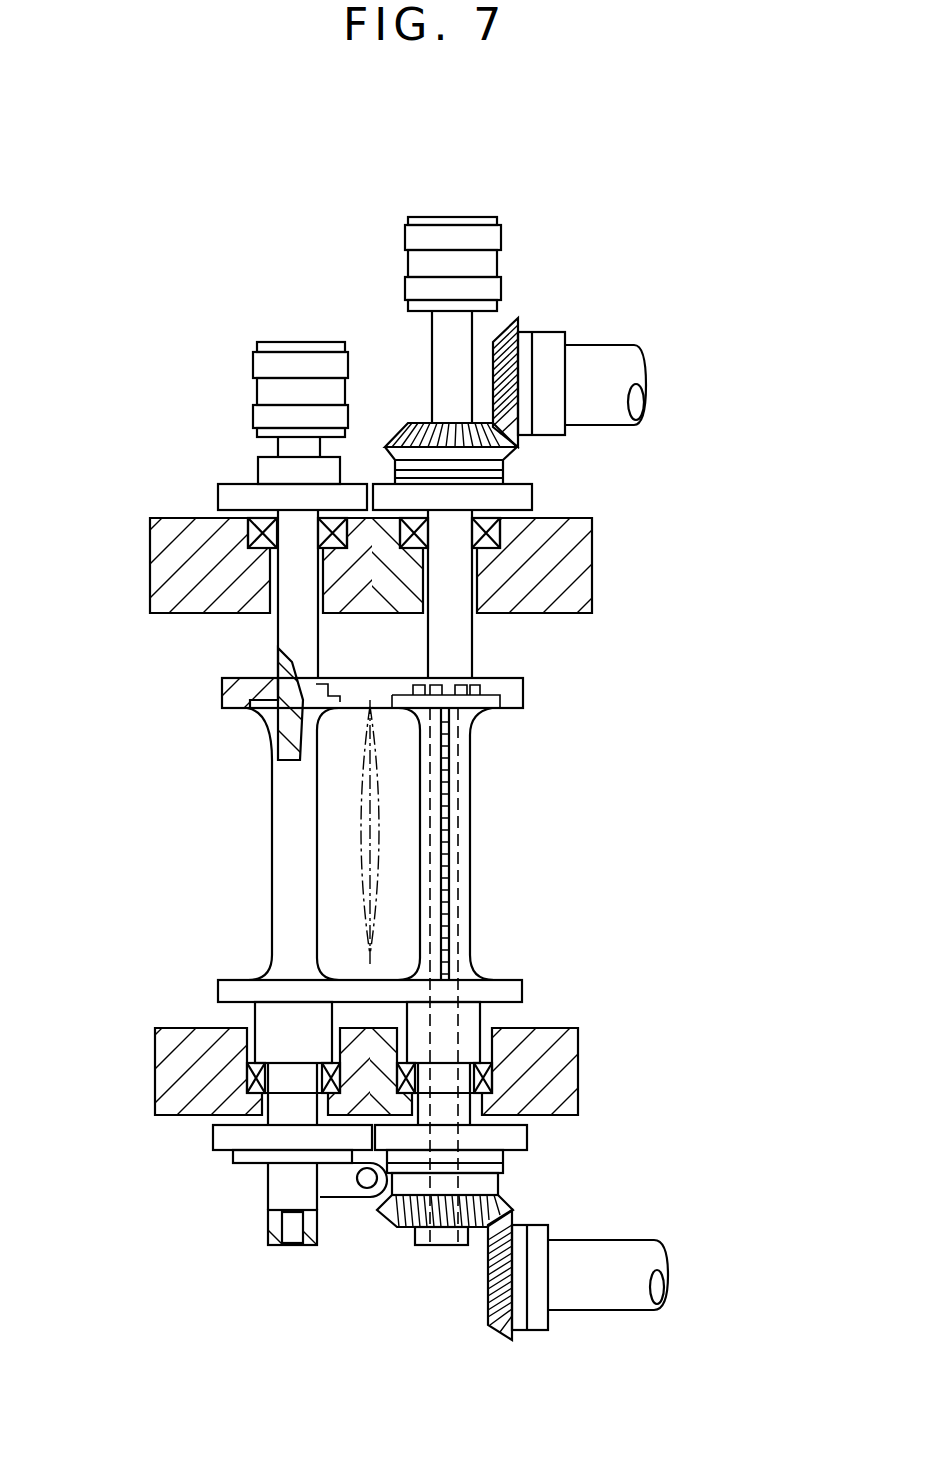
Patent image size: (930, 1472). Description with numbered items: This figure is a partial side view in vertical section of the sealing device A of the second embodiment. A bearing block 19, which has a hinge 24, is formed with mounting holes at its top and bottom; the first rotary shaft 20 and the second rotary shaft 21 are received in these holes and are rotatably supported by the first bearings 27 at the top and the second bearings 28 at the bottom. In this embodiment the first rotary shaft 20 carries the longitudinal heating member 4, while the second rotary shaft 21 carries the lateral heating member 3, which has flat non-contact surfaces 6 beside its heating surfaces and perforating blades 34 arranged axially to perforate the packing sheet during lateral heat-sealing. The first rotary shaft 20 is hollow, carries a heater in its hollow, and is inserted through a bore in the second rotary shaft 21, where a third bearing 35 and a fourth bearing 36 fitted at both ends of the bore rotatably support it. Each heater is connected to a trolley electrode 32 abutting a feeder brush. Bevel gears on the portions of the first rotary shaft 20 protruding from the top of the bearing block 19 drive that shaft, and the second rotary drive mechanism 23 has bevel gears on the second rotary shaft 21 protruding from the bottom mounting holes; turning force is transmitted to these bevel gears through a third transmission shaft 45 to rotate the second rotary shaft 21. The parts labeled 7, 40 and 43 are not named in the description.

The sealing device A is at (479, 178).
The trolley electrode 32 is at (487, 242).
The second rotary drive mechanism 23 is at (525, 302).
The third transmission shaft 45 is at (520, 447).
The spur gear 40 is at (236, 483).
The bearing block 19 is at (552, 613).
The first bearing 27 is at (258, 535).
The first rotary shaft 20 is at (465, 656).
The third bearing 35 is at (280, 662).
The longitudinal heating member 4 is at (520, 692).
The plate 7 is at (465, 736).
The lateral heating member 3 is at (290, 825).
The flat non-contact surface 6 is at (473, 848).
The perforating blade 34 is at (446, 792).
The second rotary shaft 21 is at (468, 1026).
The second bearing 28 is at (250, 1062).
The fourth bearing 36 is at (278, 1245).
The hinge 24 is at (347, 1202).
The bevel gear 43 is at (514, 1212).